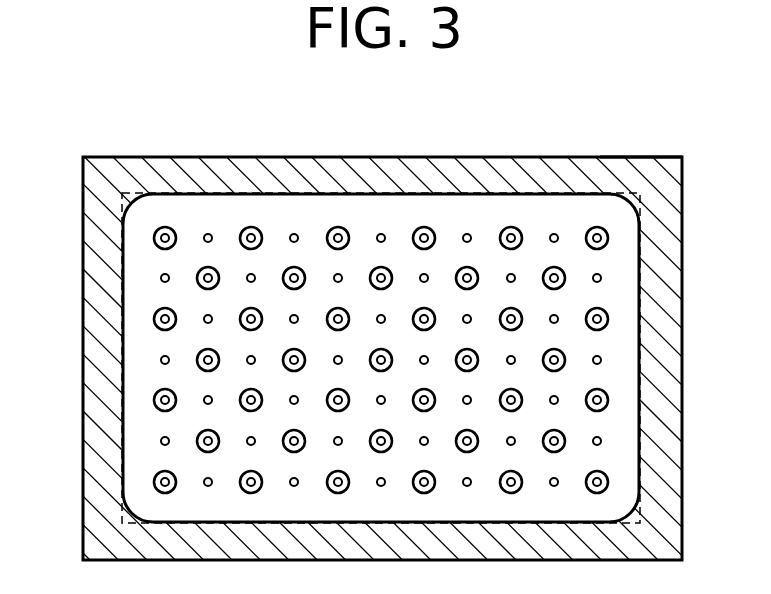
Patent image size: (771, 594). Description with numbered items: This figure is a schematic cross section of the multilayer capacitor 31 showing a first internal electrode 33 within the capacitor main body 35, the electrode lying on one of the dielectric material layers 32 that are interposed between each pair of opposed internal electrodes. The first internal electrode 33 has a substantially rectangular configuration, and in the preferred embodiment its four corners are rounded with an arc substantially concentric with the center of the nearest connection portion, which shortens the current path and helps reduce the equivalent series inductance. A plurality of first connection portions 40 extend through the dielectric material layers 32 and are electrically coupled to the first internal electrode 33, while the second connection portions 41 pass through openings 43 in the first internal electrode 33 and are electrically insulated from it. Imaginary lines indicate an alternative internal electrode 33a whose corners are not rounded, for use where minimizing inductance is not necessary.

The multilayer capacitor 31 is at (135, 155).
The dielectric material layers 32 is at (100, 525).
The first internal electrode 33 is at (637, 211).
The internal electrode 33a is at (640, 194).
The capacitor main body 35 is at (627, 152).
The first connection portions 40 is at (294, 233).
The second connection portions 41 is at (424, 227).
The openings 43 is at (597, 227).